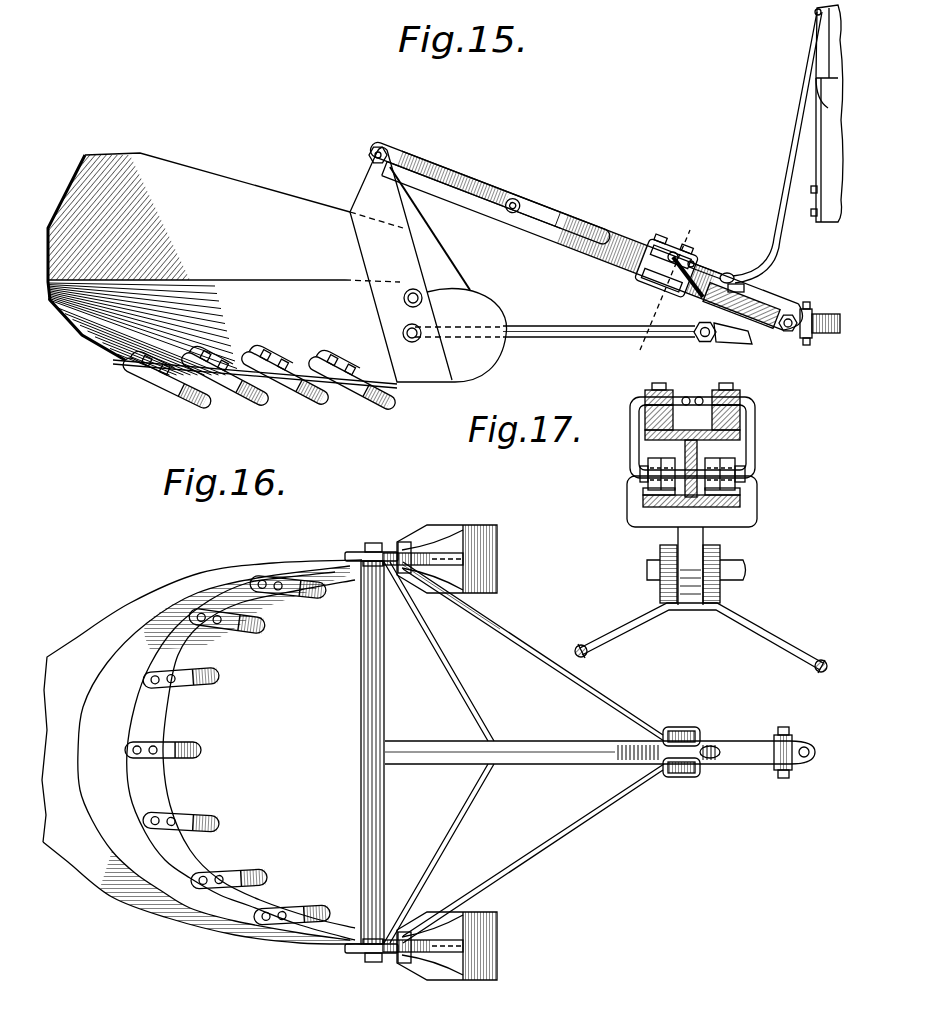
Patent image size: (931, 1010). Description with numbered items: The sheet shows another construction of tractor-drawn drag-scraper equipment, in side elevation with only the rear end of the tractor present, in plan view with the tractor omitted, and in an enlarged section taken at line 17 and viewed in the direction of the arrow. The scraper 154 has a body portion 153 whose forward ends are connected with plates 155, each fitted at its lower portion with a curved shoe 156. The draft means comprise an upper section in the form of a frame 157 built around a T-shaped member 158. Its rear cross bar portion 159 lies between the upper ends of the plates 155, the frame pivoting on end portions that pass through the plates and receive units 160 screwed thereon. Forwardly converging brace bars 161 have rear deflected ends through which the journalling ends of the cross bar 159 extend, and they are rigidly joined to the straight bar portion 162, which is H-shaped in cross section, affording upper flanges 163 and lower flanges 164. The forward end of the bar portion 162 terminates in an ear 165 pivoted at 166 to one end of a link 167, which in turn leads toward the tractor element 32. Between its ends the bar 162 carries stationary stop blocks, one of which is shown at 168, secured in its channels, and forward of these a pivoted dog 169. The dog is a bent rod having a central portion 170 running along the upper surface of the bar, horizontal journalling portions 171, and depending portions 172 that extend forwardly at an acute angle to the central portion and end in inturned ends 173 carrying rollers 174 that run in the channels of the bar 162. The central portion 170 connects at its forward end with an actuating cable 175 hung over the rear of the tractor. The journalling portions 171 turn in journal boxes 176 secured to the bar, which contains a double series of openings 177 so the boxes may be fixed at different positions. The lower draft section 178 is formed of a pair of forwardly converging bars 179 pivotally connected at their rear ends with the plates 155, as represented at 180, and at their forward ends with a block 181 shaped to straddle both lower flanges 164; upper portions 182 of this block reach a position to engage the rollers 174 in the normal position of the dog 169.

In FIG. 15, the section line 17 is at (707, 230).
In FIG. 15, the lever 32 is at (833, 313).
In FIG. 15, the body portion 153 is at (203, 208).
In FIG. 16, the body portion 153 is at (163, 912).
In FIG. 15, the scraper 154 is at (278, 230).
In FIG. 16, the scraper 154 is at (205, 931).
In FIG. 15, the plates 155 is at (407, 273).
In FIG. 15, the curved shoes 156 is at (497, 350).
In FIG. 16, the curved shoes 156 is at (498, 554).
In FIG. 15, the frame 157 is at (517, 226).
In FIG. 16, the frame 157 is at (515, 766).
In FIG. 15, the T-shaped member 158 is at (570, 230).
In FIG. 16, the T-shaped member 158 is at (541, 746).
In FIG. 16, the cross bar portion 159 is at (363, 713).
In FIG. 16, the nuts 160 is at (372, 543).
In FIG. 15, the brace bars 161 is at (478, 168).
In FIG. 16, the brace bars 161 is at (477, 708).
In FIG. 15, the straight bar portion 162 is at (578, 246).
In FIG. 16, the straight bar portion 162 is at (580, 769).
In FIG. 15, the upper flanges 163 is at (663, 250).
In FIG. 17, the upper flanges 163 is at (655, 416).
In FIG. 17, the lower flanges 164 is at (647, 506).
In FIG. 15, the ear 165 is at (777, 320).
In FIG. 16, the ear 165 is at (773, 768).
In FIG. 15, the pivot 166 is at (783, 330).
In FIG. 16, the pivot 166 is at (787, 735).
In FIG. 15, the link 167 is at (794, 337).
In FIG. 16, the link 167 is at (800, 771).
In FIG. 15, the stop block 168 is at (538, 220).
In FIG. 15, the dog 169 is at (713, 272).
In FIG. 17, the dog 169 is at (702, 397).
In FIG. 15, the central portion 170 is at (767, 267).
In FIG. 16, the central portion 170 is at (708, 744).
In FIG. 15, the journalling portions 171 is at (678, 252).
In FIG. 17, the journalling portions 171 is at (658, 388).
In FIG. 16, the journalling portions 171 is at (655, 731).
In FIG. 15, the depending portions 172 is at (655, 273).
In FIG. 17, the depending portions 172 is at (635, 456).
In FIG. 17, the inturned ends 173 is at (688, 464).
In FIG. 15, the rollers 174 is at (745, 286).
In FIG. 17, the rollers 174 is at (723, 460).
In FIG. 15, the actuating cable 175 is at (778, 223).
In FIG. 15, the journal boxes 176 is at (662, 250).
In FIG. 17, the journal boxes 176 is at (650, 402).
In FIG. 16, the openings 177 is at (622, 742).
In FIG. 15, the lower section 178 is at (590, 327).
In FIG. 17, the lower section 178 is at (749, 602).
In FIG. 16, the lower section 178 is at (561, 852).
In FIG. 15, the converging bars 179 is at (525, 325).
In FIG. 17, the converging bars 179 is at (773, 622).
In FIG. 16, the converging bars 179 is at (540, 616).
In FIG. 15, the pivotal connection 180 is at (417, 328).
In FIG. 15, the block 181 is at (700, 318).
In FIG. 17, the block 181 is at (707, 536).
In FIG. 17, the upper portions 182 is at (740, 493).